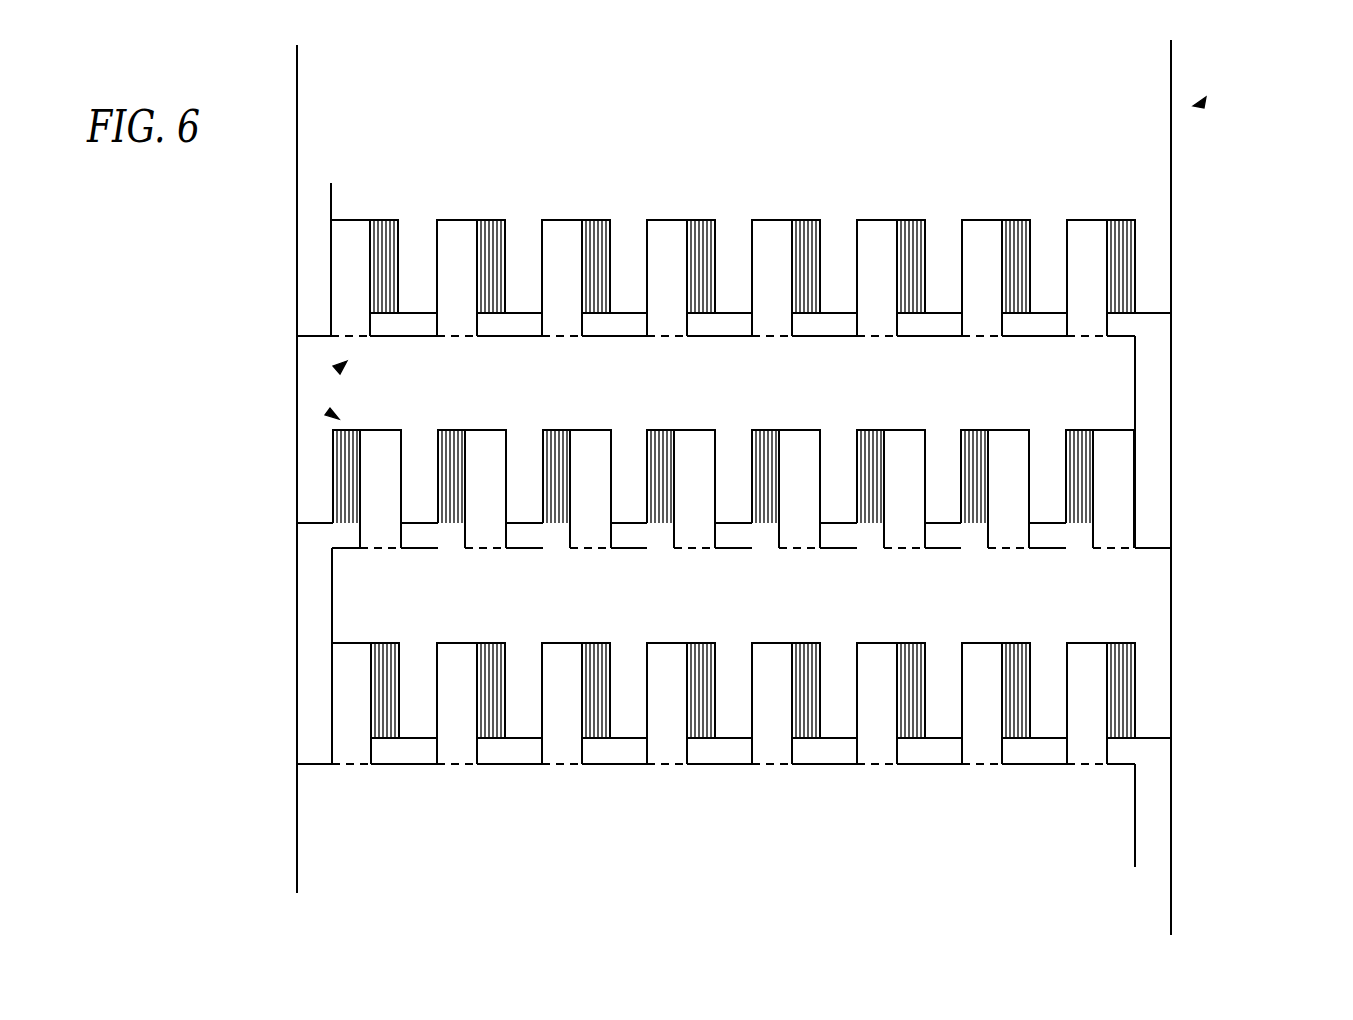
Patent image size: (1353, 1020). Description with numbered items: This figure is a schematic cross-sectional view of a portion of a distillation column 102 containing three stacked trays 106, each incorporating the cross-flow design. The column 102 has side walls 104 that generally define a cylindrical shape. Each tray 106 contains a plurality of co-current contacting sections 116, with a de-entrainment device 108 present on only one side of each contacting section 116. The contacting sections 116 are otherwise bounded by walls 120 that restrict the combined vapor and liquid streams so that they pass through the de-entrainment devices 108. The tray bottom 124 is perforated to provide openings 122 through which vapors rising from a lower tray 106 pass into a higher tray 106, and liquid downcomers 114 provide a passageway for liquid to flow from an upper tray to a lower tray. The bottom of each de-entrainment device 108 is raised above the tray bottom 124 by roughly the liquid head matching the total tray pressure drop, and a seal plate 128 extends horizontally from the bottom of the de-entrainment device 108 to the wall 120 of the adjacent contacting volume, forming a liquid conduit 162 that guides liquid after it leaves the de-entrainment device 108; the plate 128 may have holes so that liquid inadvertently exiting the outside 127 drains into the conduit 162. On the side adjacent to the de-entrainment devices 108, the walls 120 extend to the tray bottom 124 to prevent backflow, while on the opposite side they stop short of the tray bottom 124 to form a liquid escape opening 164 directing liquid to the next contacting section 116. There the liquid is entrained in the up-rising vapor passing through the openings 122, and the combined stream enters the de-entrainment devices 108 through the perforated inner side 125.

The distillation column 102 is at (1193, 106).
The side walls 104 is at (297, 189).
The trays 106 is at (337, 418).
The de-entrainment devices 108 is at (598, 238).
The liquid downcomers 114 is at (315, 300).
The co-current contacting sections 116 is at (733, 492).
The wall 120 is at (562, 219).
The openings 122 is at (571, 338).
The tray bottom 124 is at (1047, 337).
The inner side 125 is at (580, 236).
The outside 127 is at (612, 238).
The seal plate 128 is at (1045, 303).
The liquid conduit 162 is at (725, 337).
The liquid escape opening 164 is at (753, 338).